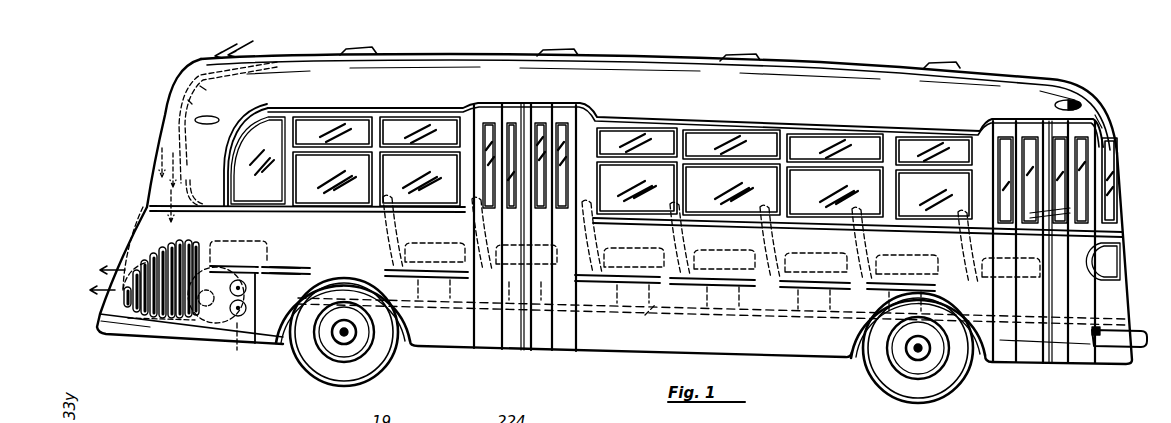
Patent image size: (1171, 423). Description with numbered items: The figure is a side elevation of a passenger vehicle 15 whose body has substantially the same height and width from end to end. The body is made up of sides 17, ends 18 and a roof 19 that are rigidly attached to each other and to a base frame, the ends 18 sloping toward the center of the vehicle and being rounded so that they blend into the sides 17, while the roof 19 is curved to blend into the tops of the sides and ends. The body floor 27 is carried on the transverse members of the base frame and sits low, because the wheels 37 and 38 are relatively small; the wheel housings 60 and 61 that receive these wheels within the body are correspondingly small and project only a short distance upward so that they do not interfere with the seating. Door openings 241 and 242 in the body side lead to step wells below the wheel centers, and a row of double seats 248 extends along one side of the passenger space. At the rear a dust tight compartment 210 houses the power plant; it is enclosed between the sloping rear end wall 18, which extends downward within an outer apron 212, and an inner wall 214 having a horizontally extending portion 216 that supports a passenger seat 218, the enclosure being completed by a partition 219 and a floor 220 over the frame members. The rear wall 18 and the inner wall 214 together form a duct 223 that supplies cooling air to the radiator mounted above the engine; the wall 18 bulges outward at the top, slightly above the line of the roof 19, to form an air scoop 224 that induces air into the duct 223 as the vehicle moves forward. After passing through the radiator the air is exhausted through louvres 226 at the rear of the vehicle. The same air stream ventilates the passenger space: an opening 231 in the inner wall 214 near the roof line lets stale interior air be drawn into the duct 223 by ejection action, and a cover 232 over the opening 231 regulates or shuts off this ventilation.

The vehicle 15 is at (654, 55).
The sides 17 is at (788, 341).
The ends 18 is at (140, 226).
The roof 19 is at (421, 54).
The floor 27 is at (646, 316).
The wheels 37 is at (337, 342).
The wheels 38 is at (917, 392).
The wheel housing 60 is at (282, 342).
The wheel housing 61 is at (862, 357).
The compartment 210 is at (237, 323).
The outer apron 212 is at (128, 262).
The inner wall 214 is at (202, 171).
The horizontally extending portion 216 is at (231, 242).
The passenger seat 218 is at (254, 242).
The partition 219 is at (277, 305).
The floor 220 is at (162, 338).
The duct 223 is at (170, 120).
The air scoop 224 is at (200, 60).
The louvres 226 is at (173, 246).
The opening 231 is at (190, 101).
The cover 232 is at (203, 89).
The door opening 241 is at (1023, 343).
The door opening 242 is at (476, 236).
The double seats 248 is at (606, 238).